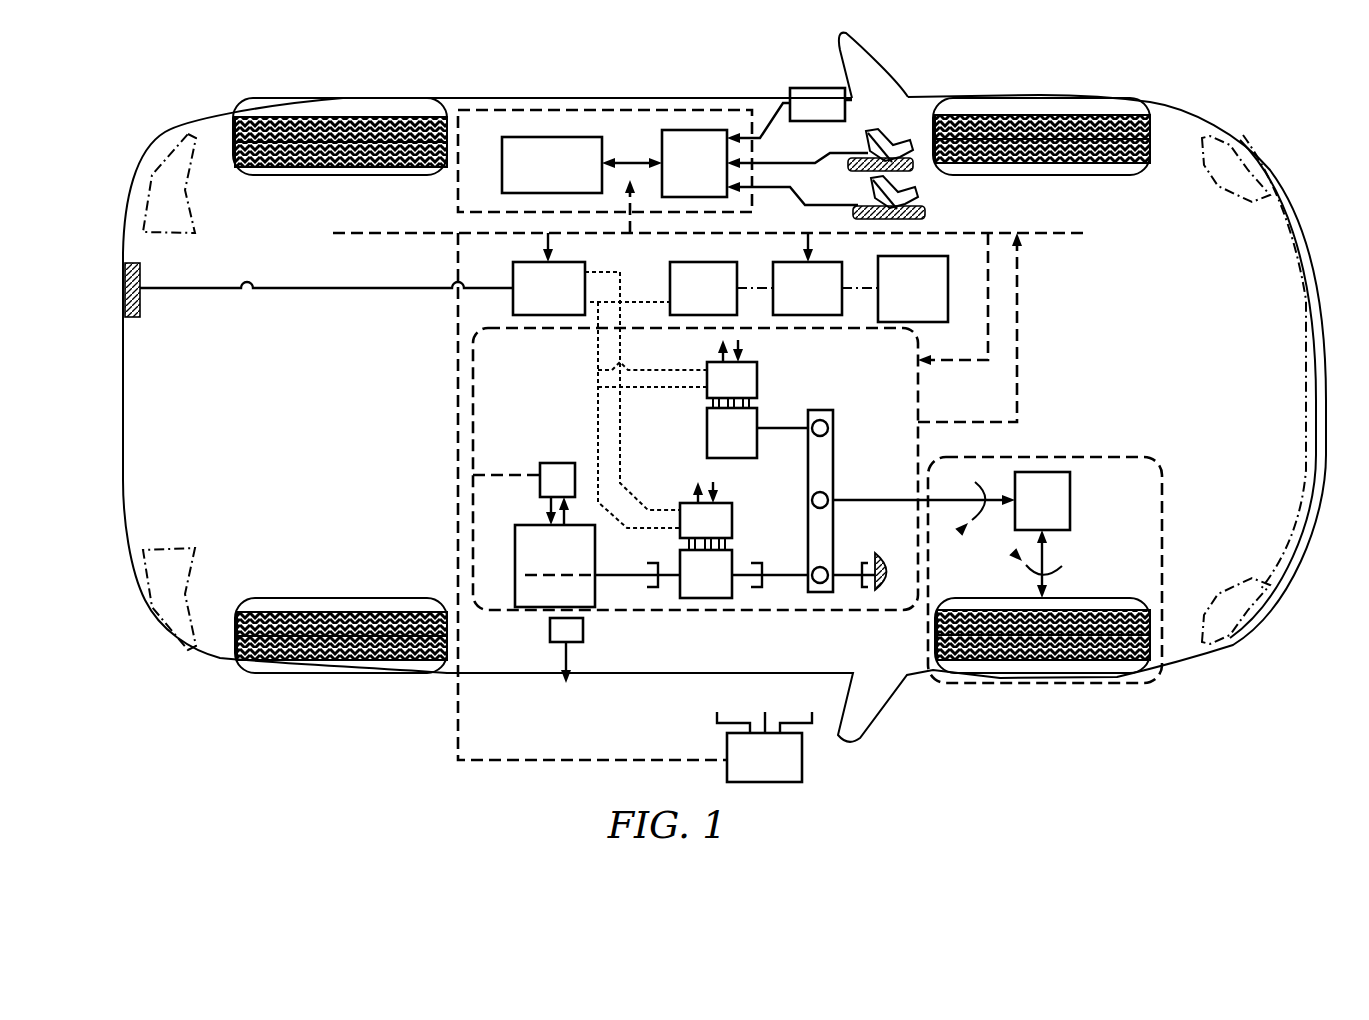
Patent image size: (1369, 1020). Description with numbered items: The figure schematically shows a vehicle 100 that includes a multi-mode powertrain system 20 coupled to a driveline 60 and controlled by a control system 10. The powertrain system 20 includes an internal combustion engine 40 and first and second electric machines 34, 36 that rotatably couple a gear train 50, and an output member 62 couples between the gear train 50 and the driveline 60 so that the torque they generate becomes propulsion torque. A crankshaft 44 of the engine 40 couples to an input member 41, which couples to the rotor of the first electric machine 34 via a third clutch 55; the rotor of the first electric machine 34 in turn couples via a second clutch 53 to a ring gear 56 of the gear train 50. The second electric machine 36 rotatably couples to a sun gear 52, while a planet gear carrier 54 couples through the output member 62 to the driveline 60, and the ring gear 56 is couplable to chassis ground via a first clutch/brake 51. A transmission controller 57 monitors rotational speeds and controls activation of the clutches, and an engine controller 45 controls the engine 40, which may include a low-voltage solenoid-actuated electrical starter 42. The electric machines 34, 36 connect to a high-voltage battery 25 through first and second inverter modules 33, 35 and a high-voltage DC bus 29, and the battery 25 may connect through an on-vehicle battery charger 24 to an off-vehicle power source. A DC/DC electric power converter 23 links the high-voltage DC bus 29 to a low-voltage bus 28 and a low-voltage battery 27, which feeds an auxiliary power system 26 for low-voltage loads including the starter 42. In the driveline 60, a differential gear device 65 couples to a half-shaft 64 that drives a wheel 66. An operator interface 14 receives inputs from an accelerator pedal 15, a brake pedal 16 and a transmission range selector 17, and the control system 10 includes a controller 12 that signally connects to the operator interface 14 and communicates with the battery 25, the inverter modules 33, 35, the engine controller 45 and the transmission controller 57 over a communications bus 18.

The vehicle 100 is at (724, 387).
The control system 10 is at (605, 161).
The controller 12 is at (552, 165).
The operator interface 14 is at (664, 163).
The accelerator pedal 15 is at (858, 203).
The brake pedal 16 is at (866, 152).
The transmission range selector 17 is at (789, 115).
The communications bus 18 is at (390, 222).
The multi-mode powertrain system 20 is at (928, 379).
The DC/DC electric power converter 23 is at (703, 288).
The on-vehicle battery charger 24 is at (125, 272).
The high-voltage energy storage device (battery) 25 is at (549, 288).
The auxiliary power system 26 is at (913, 289).
The low-voltage battery 27 is at (807, 288).
The low-voltage bus 28 is at (748, 288).
The high-voltage DC bus 29 is at (655, 298).
The first inverter module 33 is at (732, 520).
The first electric machine 34 is at (700, 600).
The second inverter module 35 is at (757, 380).
The second electric machine 36 is at (745, 458).
The internal combustion engine 40 is at (606, 605).
The input member 41 is at (655, 592).
The low-voltage solenoid-actuated electrical starter 42 is at (580, 645).
The crankshaft 44 is at (555, 572).
The engine controller (ECM) 45 is at (528, 467).
The gear train 50 is at (824, 607).
The first clutch/brake 51 is at (880, 595).
The sun gear 52 is at (830, 428).
The second clutch 53 is at (760, 597).
The planet gear carrier 54 is at (830, 500).
The third clutch 55 is at (650, 602).
The ring gear 56 is at (830, 575).
The transmission controller (TCM) 57 is at (764, 747).
The driveline 60 is at (1081, 445).
The output member 62 is at (948, 500).
The half-shaft 64 is at (1050, 556).
The differential gear device 65 is at (1042, 501).
The wheel 66 is at (1014, 588).